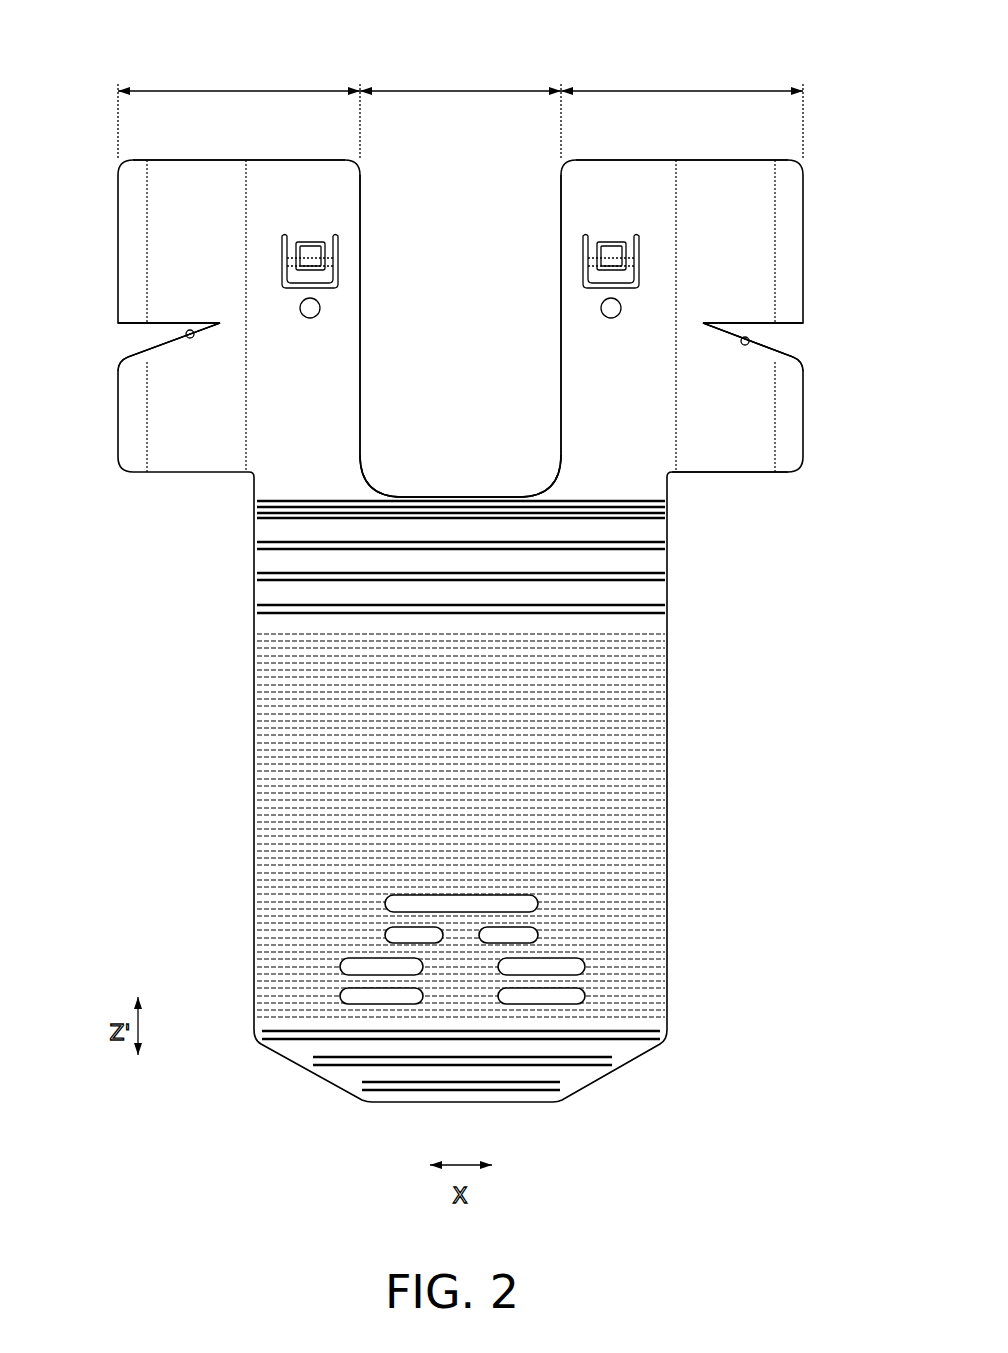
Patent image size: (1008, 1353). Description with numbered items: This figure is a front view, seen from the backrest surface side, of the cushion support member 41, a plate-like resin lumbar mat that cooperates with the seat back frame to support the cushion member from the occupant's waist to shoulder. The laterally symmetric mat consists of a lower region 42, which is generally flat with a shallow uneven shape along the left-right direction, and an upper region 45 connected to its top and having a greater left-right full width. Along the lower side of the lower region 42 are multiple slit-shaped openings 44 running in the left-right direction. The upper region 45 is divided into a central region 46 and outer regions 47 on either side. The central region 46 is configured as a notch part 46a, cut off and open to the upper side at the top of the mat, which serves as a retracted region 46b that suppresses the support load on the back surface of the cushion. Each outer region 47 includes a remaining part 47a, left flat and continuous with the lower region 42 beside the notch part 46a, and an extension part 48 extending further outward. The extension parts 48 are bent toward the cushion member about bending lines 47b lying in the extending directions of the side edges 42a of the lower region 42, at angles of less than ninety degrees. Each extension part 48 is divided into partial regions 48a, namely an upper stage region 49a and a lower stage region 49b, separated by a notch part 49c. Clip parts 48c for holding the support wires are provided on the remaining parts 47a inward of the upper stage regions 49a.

The cushion support member 41 is at (733, 53).
The lower region 42 is at (672, 647).
The side edges 42a is at (254, 763).
The openings 44 is at (392, 901).
The upper region 45 is at (748, 479).
The central region 46 is at (460, 76).
The notch part 46a is at (362, 342).
The retracted region 46b is at (460, 476).
The outer regions 47 is at (460, 110).
The remaining parts 47a is at (307, 176).
The bending lines 47b is at (247, 440).
The extension parts 48 is at (55, 428).
The partial regions 48a is at (461, 316).
The clip parts 48c is at (340, 248).
The upper stage region 49a is at (163, 283).
The lower stage region 49b is at (150, 390).
The notch part 49c is at (191, 338).